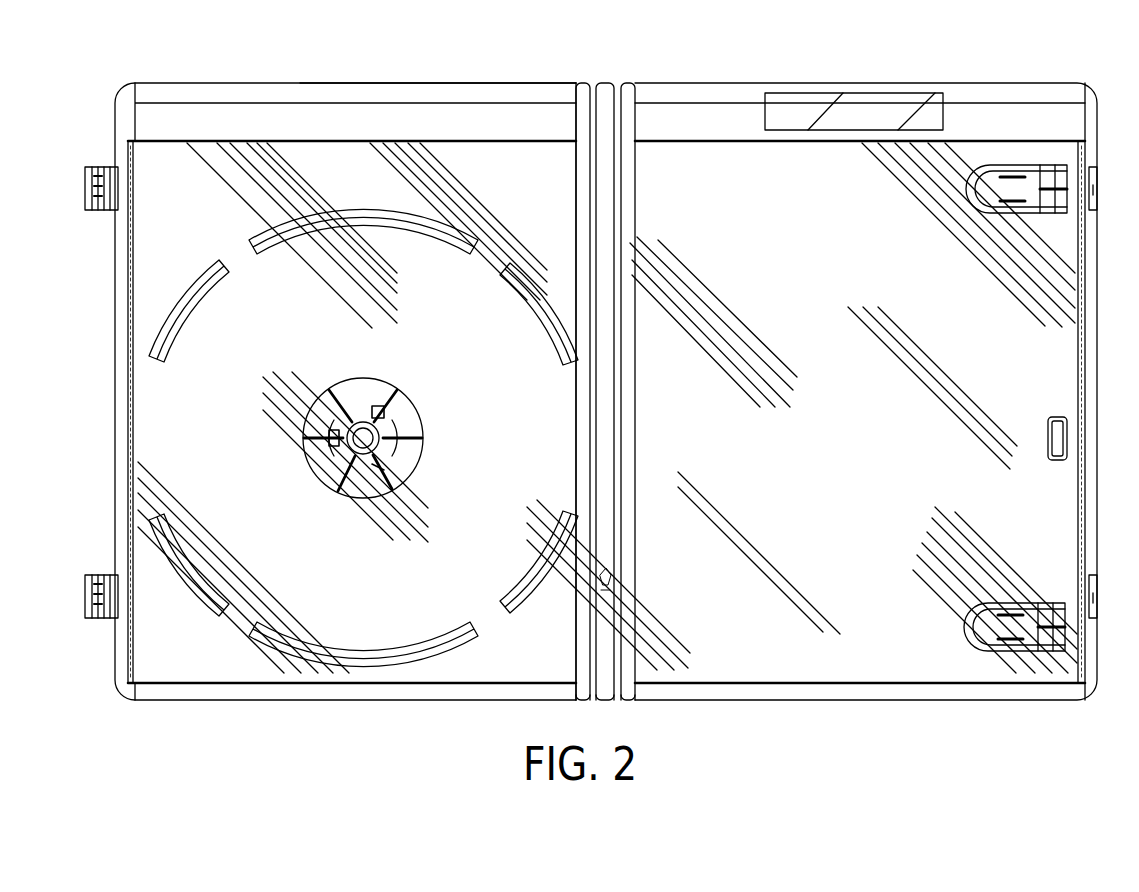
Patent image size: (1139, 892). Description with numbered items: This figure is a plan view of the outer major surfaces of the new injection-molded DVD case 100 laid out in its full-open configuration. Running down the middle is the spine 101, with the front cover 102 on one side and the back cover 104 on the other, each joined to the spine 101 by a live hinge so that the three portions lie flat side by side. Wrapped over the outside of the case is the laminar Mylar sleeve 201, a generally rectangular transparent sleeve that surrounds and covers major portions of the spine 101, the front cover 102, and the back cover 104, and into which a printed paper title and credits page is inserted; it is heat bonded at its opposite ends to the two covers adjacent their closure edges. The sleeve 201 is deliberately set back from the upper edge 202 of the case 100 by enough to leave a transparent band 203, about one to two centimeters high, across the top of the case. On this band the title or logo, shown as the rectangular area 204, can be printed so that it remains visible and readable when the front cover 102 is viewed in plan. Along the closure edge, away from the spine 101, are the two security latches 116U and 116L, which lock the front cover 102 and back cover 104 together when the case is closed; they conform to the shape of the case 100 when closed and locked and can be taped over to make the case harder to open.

The injection-molded DVD case 100 is at (448, 52).
The spine 101 is at (606, 118).
The front cover 102 is at (960, 122).
The back cover 104 is at (167, 120).
The upper security latch 116U is at (108, 180).
The lower security latch 116L is at (108, 590).
The laminar Mylar sleeve 201 is at (334, 168).
The upper edge 202 is at (485, 81).
The transparent band 203 is at (705, 122).
The rectangular area 204 is at (864, 120).